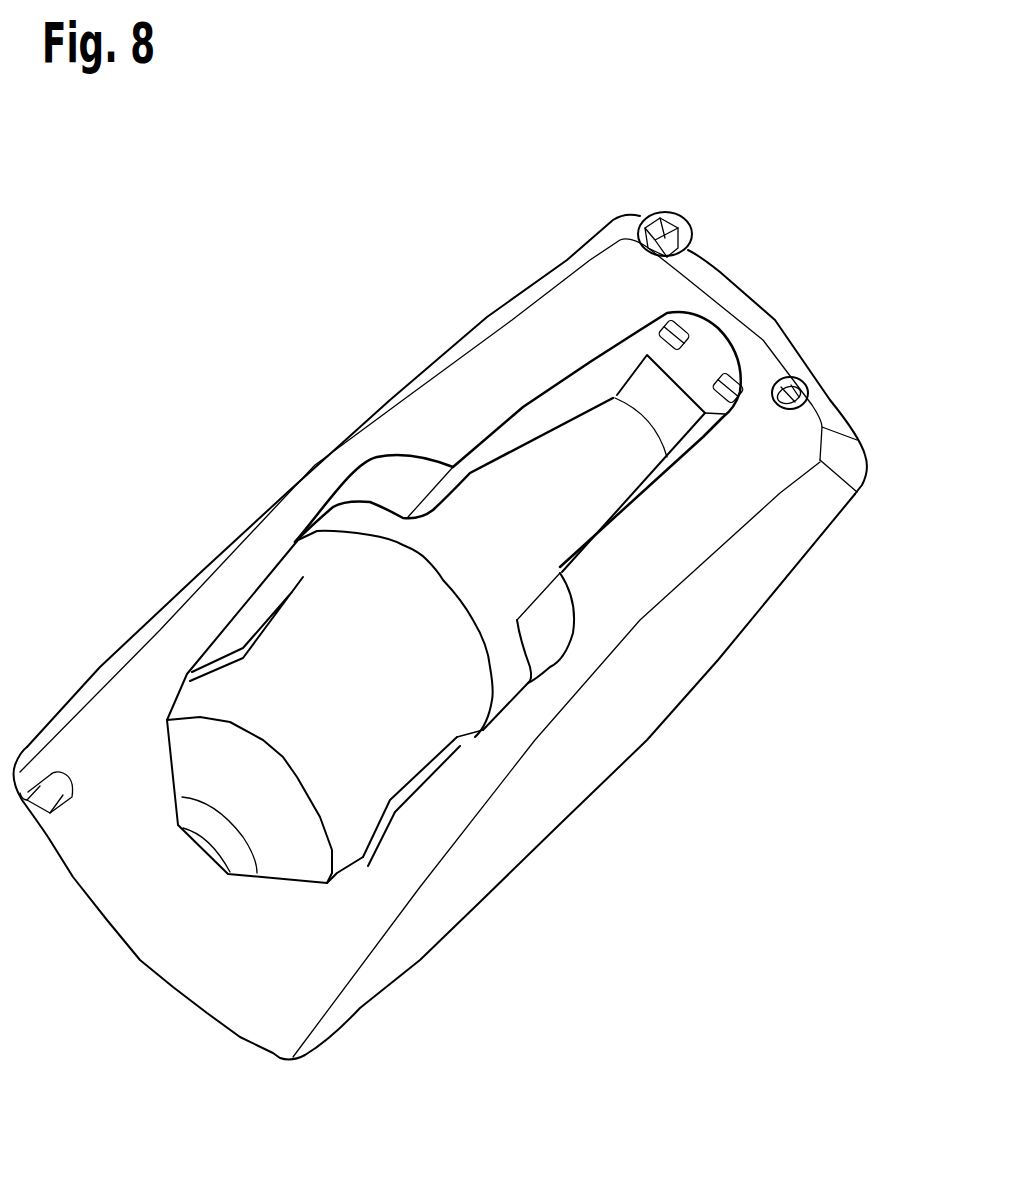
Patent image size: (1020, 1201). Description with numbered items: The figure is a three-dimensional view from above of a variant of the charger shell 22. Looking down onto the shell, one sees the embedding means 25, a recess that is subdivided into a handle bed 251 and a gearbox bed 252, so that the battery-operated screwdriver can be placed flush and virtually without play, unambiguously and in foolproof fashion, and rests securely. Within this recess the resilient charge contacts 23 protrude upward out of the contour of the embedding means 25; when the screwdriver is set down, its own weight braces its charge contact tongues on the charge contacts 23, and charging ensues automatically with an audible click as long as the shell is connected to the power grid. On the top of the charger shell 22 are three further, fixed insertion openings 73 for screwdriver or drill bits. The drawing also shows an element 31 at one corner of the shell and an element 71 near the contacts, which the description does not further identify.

The charger shell 22 is at (540, 203).
The charge contacts 23 is at (732, 383).
The embedding means 25 is at (473, 550).
The handle bed 251 is at (553, 484).
The gearbox bed 252 is at (308, 685).
The latching clip 31 is at (40, 813).
The screw 71 is at (797, 384).
The insertion openings 73 is at (668, 218).